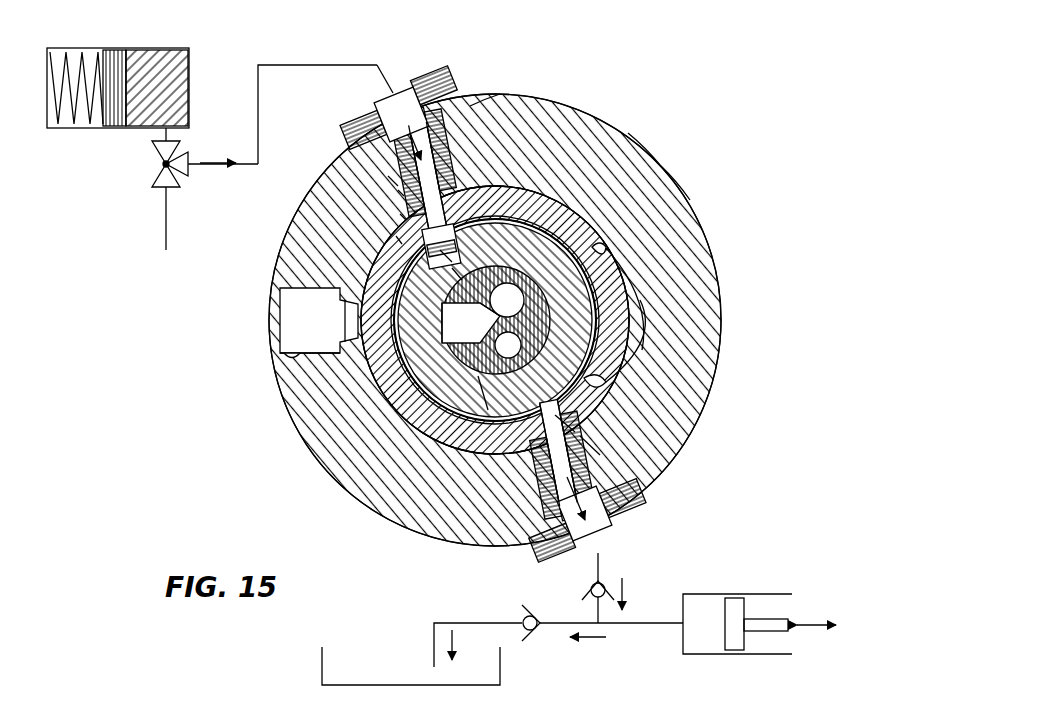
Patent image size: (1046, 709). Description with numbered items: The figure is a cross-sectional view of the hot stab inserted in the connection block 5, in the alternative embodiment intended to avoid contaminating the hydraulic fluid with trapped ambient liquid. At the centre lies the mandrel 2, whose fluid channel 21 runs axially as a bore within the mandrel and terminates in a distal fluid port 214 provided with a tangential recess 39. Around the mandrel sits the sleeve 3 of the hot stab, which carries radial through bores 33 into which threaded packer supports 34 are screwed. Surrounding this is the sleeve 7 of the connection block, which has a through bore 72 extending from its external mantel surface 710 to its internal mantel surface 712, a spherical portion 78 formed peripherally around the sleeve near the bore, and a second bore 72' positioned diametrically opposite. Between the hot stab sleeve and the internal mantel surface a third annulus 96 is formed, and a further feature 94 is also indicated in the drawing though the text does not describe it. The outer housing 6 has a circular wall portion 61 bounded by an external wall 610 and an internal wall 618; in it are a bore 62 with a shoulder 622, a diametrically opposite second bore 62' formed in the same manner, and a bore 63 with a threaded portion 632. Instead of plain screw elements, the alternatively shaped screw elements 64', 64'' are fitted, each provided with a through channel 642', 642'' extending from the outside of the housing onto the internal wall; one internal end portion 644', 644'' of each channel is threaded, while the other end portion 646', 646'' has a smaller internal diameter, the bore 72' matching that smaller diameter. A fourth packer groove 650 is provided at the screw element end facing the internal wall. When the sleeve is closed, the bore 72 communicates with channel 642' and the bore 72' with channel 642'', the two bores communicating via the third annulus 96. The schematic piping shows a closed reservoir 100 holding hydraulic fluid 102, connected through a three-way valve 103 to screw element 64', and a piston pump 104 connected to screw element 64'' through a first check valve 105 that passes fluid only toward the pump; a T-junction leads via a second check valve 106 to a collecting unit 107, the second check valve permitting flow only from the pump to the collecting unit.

The mandrel 2 is at (432, 498).
The sleeve 3 is at (458, 512).
The connection block 5 is at (384, 54).
The housing 6 is at (572, 96).
The sleeve 7 is at (628, 310).
The fluid channel 21 is at (392, 440).
The distal fluid port 214 is at (392, 405).
The radial through bore 33 is at (446, 262).
The packer support 34 is at (442, 252).
The recess 39 is at (458, 276).
The circular wall portion 61 is at (626, 134).
The external wall 610 is at (660, 166).
The internal wall 618 is at (594, 244).
The through bore 62 is at (338, 162).
The second bore 62' is at (667, 451).
The shoulder 622 is at (402, 191).
The through bore 63 is at (276, 308).
The threaded portion 632 is at (292, 356).
The screw element 64' is at (305, 253).
The screw element 64'' is at (641, 486).
The through channel 642' is at (315, 116).
The through channel 642'' is at (630, 524).
The internal end portion 644' is at (386, 77).
The internal end portion 644'' is at (635, 515).
The end portion 646' is at (398, 126).
The end portion 646'' is at (648, 456).
The fourth packer groove 650 is at (404, 217).
The through bore 72 is at (318, 244).
The second bore 72' is at (667, 420).
The external mantel surface 710 is at (640, 345).
The internal mantel surface 712 is at (592, 378).
The spherical portion 78 is at (480, 108).
The fluid passage 94 is at (620, 262).
The third annulus 96 is at (496, 518).
The closed reservoir 100 is at (144, 69).
The hydraulic fluid 102 is at (150, 62).
The three-way valve 103 is at (160, 165).
The piston pump 104 is at (702, 594).
The first check valve 105 is at (608, 586).
The second check valve 106 is at (535, 636).
The collecting unit 107 is at (378, 683).